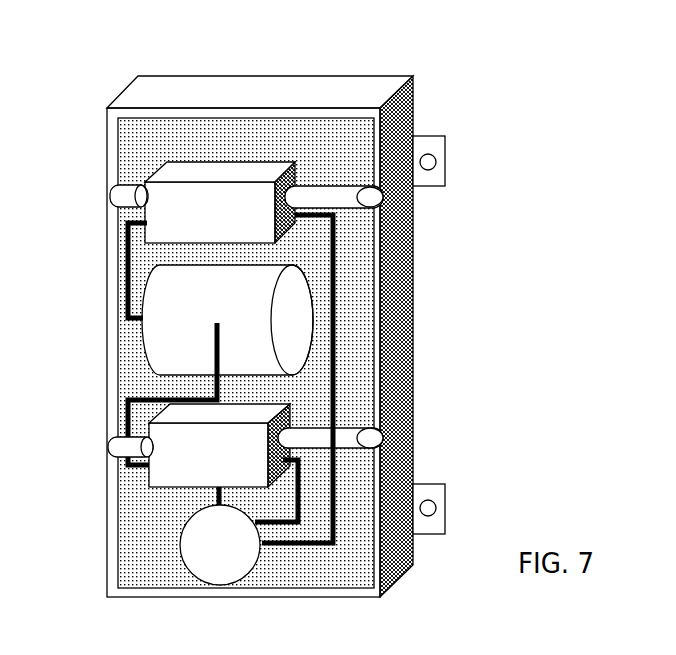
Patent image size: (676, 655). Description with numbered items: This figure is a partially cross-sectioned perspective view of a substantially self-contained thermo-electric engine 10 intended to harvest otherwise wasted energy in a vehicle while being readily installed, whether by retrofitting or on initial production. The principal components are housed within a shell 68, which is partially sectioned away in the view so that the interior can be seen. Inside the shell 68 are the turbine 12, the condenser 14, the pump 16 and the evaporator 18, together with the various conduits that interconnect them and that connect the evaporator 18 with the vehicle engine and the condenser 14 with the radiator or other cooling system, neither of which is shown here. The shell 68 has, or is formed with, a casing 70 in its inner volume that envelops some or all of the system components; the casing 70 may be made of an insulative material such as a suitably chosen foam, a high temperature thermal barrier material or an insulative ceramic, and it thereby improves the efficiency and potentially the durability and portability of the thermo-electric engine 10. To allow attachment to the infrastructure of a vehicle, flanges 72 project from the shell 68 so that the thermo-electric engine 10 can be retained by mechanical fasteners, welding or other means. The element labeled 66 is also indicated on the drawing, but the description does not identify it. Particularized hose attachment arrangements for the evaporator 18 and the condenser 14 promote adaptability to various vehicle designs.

The thermo-electric engine 10 is at (285, 304).
The turbine 12 is at (212, 301).
The condenser 14 is at (293, 388).
The pump 16 is at (288, 560).
The evaporator 18 is at (243, 165).
The wall of housing 66 is at (300, 328).
The shell 68 is at (230, 98).
The casing 70 is at (333, 143).
The flanges 72 is at (445, 163).